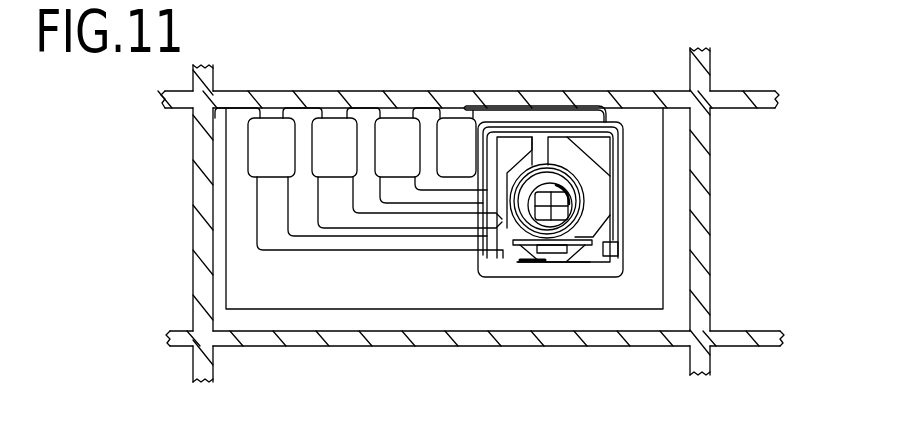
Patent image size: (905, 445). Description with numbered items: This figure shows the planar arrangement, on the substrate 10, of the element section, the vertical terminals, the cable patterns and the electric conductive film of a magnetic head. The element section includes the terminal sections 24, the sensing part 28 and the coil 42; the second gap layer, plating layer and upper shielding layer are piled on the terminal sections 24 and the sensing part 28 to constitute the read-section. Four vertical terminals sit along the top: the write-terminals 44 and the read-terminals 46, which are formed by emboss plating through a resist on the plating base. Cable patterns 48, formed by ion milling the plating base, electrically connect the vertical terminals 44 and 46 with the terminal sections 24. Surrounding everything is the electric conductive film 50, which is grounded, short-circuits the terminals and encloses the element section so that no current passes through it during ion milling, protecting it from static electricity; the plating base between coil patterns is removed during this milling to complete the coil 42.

The substrate 10 is at (398, 305).
The terminal section 24 is at (600, 210).
The sensing part 28 is at (560, 260).
The coil 42 is at (567, 183).
The write-terminals 44 is at (270, 133).
The read-terminals 46 is at (393, 138).
The cable patterns 48 is at (263, 212).
The electric conductive film 50 is at (583, 97).